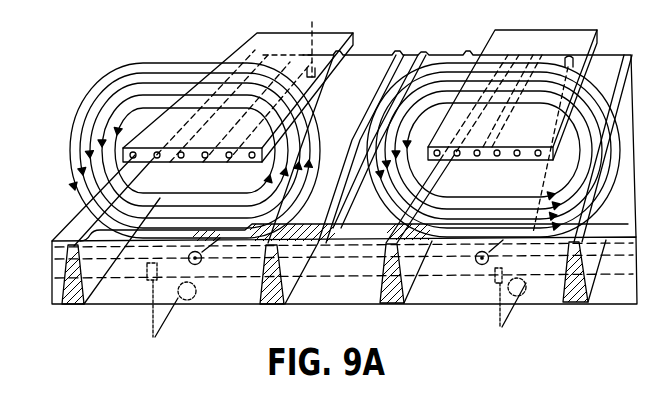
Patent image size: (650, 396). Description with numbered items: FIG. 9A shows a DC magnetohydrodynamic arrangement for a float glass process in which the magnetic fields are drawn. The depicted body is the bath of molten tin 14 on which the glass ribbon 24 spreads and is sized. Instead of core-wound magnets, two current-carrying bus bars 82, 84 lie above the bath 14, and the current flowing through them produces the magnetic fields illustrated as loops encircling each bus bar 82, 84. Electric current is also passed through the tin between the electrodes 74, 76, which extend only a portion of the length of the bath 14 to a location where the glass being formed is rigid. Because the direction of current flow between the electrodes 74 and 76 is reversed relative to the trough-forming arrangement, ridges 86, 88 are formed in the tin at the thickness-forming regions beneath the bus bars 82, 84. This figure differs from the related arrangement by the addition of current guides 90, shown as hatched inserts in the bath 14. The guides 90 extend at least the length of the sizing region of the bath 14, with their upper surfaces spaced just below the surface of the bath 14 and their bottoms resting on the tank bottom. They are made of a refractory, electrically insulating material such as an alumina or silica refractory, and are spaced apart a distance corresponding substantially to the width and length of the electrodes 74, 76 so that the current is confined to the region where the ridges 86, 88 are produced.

The bath of molten tin 14 is at (344, 177).
The ribbon 24 is at (338, 225).
The electrode 74 is at (147, 285).
The electrode 76 is at (568, 53).
The current-carrying bus bar 82 is at (250, 41).
The current-carrying bus bar 84 is at (492, 40).
The ridge 86 is at (181, 228).
The ridge 88 is at (464, 226).
The current guide 90 is at (70, 306).